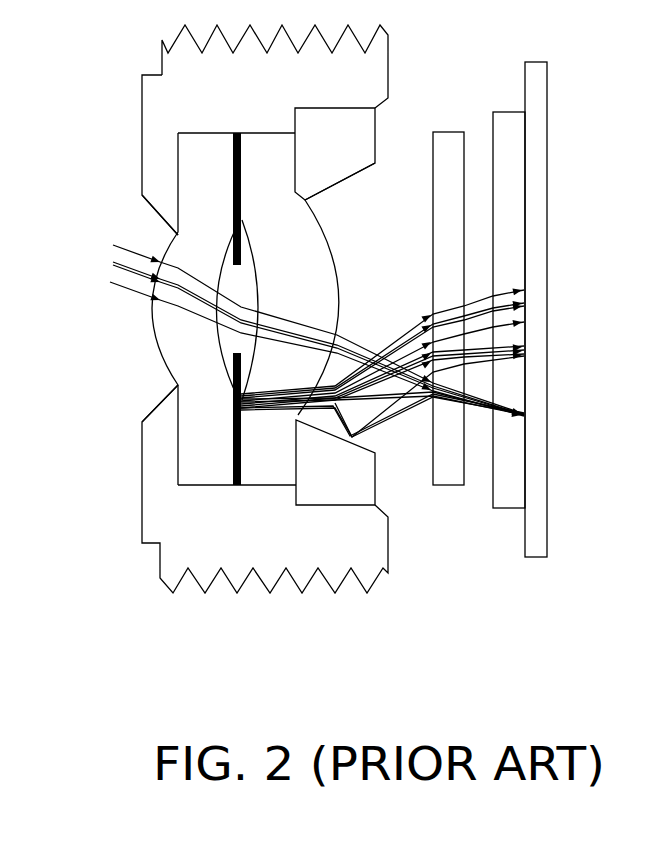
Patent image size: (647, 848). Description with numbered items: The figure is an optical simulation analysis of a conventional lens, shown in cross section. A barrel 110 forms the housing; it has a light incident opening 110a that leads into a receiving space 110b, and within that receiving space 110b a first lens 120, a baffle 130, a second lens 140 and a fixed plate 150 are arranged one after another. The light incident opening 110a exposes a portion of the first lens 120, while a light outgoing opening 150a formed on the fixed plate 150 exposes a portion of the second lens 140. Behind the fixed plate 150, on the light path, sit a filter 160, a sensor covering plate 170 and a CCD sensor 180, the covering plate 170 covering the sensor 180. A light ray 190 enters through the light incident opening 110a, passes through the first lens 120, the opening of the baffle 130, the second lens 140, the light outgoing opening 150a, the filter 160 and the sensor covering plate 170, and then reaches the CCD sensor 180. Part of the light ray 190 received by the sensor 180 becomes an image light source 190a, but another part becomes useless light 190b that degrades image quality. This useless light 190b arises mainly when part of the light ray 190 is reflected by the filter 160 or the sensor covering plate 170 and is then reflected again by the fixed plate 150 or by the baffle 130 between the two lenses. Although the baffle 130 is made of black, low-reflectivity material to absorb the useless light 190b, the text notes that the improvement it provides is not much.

The barrel 110 is at (155, 508).
The light incident opening 110a is at (150, 406).
The receiving space 110b is at (186, 484).
The first lens 120 is at (207, 460).
The baffle 130 is at (236, 486).
The second lens 140 is at (268, 455).
The fixed plate 150 is at (340, 477).
The light outgoing opening 150a is at (364, 172).
The filter 160 is at (452, 468).
The sensor covering plate 170 is at (507, 487).
The CCD sensor 180 is at (538, 548).
The light ray 190 is at (122, 286).
The image light source 190a is at (527, 415).
The useless light 190b is at (558, 287).